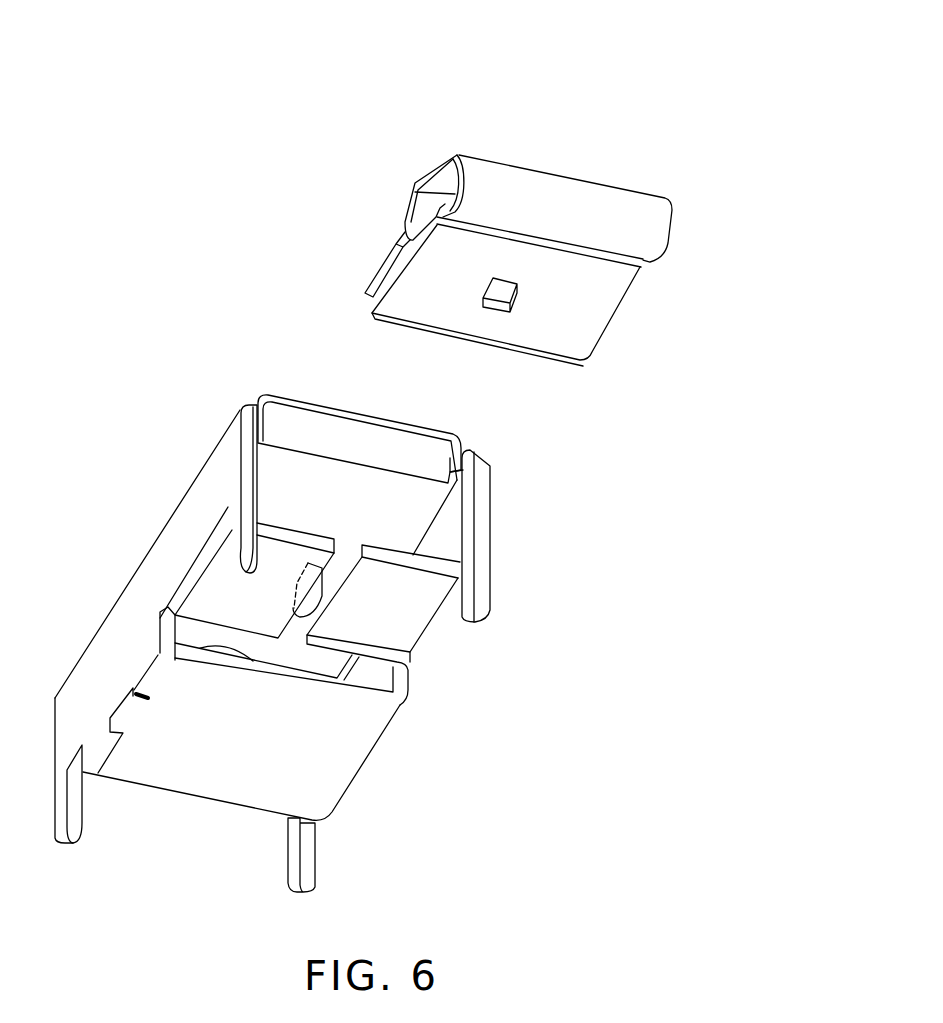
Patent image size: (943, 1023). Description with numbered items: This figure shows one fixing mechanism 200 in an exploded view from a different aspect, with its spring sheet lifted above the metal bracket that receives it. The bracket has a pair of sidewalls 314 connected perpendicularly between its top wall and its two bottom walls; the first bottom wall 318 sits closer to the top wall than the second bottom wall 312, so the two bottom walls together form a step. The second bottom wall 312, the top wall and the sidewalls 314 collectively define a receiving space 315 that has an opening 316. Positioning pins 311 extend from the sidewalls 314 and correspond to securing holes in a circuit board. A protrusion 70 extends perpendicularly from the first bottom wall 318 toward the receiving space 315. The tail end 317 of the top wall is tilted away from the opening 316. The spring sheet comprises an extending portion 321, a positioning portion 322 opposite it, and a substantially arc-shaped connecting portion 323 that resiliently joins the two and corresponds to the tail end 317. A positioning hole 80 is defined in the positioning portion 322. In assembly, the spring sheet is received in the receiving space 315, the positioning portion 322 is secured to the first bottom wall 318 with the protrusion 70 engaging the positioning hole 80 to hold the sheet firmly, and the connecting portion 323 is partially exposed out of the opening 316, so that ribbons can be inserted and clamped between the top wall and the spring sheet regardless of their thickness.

The fixing mechanism 200 is at (408, 28).
The connecting portion 323 is at (542, 198).
The extending portion 321 is at (418, 210).
The positioning portion 322 is at (587, 309).
The positioning hole 80 is at (502, 297).
The sidewall 314 is at (112, 643).
The opening 316 is at (287, 473).
The tail end 317 is at (337, 437).
The receiving space 315 is at (383, 518).
The protrusion 70 is at (297, 590).
The first bottom wall 318 is at (403, 627).
The second bottom wall 312 is at (317, 750).
The positioning pin 311 is at (310, 865).